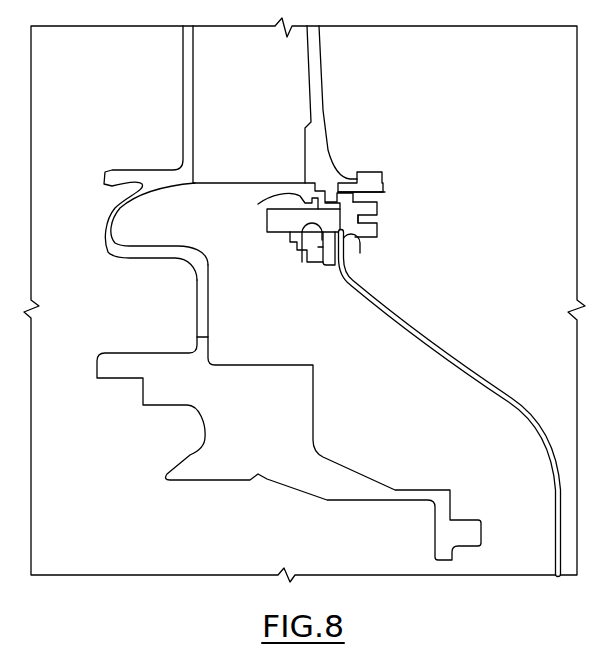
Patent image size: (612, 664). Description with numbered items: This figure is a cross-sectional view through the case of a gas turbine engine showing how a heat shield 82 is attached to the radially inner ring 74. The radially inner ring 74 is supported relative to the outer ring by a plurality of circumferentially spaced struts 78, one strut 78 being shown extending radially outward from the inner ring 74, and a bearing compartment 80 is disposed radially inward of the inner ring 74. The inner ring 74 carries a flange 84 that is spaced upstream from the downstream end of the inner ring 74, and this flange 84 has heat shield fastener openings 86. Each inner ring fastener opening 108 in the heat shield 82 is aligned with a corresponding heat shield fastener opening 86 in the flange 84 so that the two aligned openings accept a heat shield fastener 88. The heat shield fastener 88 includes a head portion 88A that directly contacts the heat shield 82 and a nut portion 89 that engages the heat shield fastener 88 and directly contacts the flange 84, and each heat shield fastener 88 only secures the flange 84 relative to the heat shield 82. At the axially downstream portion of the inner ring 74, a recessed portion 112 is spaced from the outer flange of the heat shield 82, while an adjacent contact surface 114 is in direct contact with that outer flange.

The radially inner ring 74 is at (162, 178).
The strut 78 is at (323, 81).
The bearing compartment 80 is at (363, 436).
The heat shield 82 is at (447, 355).
The flange 84 is at (329, 266).
The heat shield fastener opening 86 is at (302, 240).
The heat shield fastener 88 is at (383, 205).
The head portion 88A is at (378, 236).
The nut portion 89 is at (258, 204).
The inner ring fastener opening 108 is at (357, 237).
The recessed portion 112 is at (348, 178).
The contact surface 114 is at (378, 192).